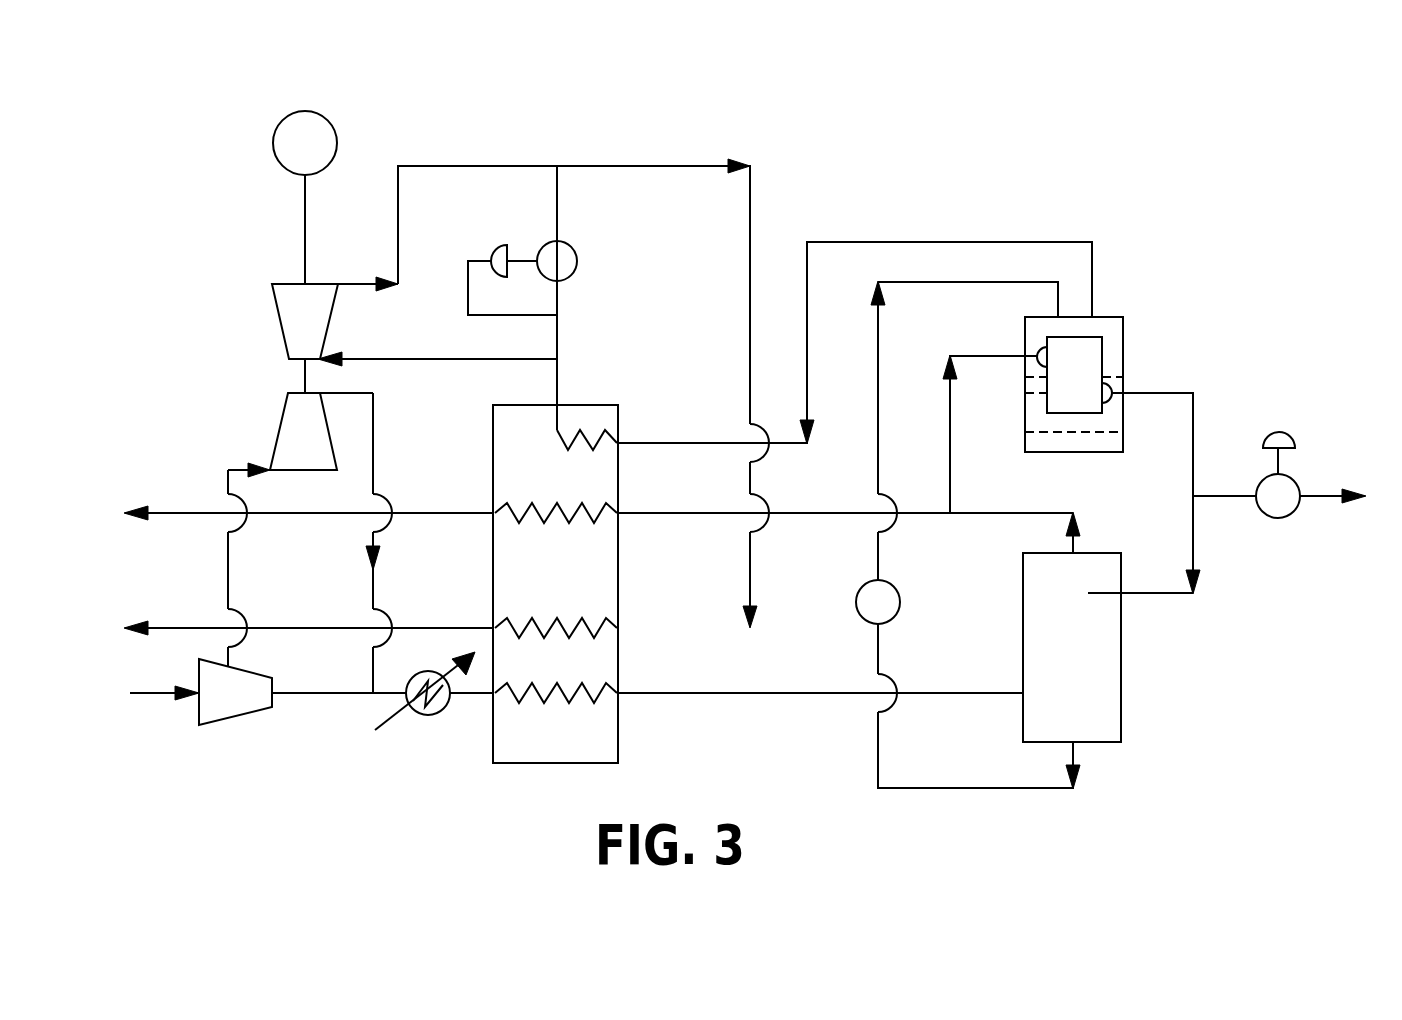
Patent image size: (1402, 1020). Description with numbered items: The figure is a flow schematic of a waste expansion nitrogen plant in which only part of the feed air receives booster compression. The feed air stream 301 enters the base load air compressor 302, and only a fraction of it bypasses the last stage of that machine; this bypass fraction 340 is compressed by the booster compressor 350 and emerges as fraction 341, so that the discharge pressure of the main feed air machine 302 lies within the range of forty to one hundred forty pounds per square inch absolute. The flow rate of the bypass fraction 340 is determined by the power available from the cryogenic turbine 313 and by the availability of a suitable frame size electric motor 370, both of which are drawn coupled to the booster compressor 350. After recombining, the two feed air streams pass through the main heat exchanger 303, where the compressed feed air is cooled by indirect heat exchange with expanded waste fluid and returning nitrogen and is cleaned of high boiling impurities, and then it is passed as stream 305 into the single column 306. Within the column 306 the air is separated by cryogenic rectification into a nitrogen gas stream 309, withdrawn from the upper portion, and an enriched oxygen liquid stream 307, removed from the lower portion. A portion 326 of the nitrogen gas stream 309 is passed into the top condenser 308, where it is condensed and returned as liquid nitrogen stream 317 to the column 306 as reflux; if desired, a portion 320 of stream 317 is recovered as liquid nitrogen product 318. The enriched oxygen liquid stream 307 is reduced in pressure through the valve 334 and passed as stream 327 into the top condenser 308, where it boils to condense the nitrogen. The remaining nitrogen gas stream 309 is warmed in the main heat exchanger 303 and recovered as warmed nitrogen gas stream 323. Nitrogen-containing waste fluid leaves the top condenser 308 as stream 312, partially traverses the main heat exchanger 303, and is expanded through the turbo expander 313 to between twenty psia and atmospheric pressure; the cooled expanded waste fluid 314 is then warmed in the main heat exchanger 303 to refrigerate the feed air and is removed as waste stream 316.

The feed air stream 301 is at (157, 695).
The base load air compressor 302 is at (237, 718).
The main heat exchanger 303 is at (532, 587).
The stream 305 is at (982, 693).
The column 306 is at (1047, 687).
The enriched oxygen liquid stream 307 is at (875, 645).
The top condenser 308 is at (1093, 358).
The nitrogen gas stream 309 is at (688, 513).
The waste fluid stream 312 is at (688, 443).
The cryogenic turbine 313 is at (277, 312).
The expanded waste fluid 314 is at (615, 166).
The waste stream 316 is at (277, 627).
The liquid nitrogen stream 317 is at (1197, 535).
The liquid nitrogen product 318 is at (1323, 495).
The portion of liquid nitrogen stream 320 is at (1217, 490).
The warmed nitrogen gas stream 323 is at (432, 512).
The portion of nitrogen gas stream 326 is at (950, 485).
The stream 327 is at (880, 367).
The valve 334 is at (863, 583).
The bypass fraction 340 is at (228, 568).
The fraction 341 is at (373, 580).
The booster compressor 350 is at (277, 440).
The electric motor 370 is at (335, 128).